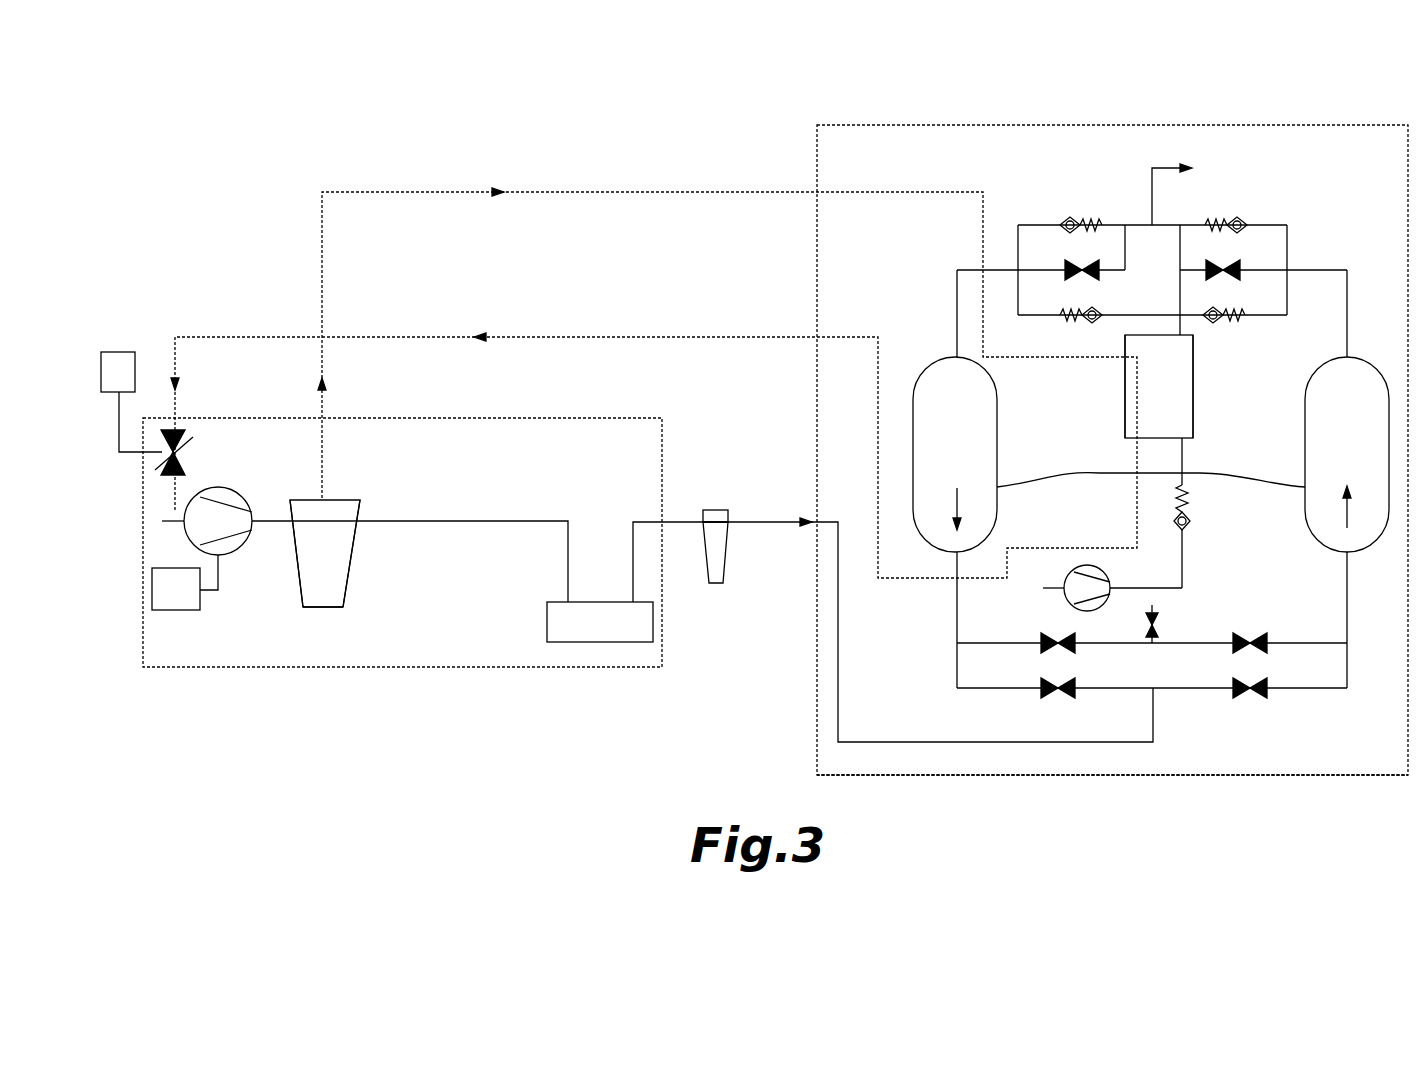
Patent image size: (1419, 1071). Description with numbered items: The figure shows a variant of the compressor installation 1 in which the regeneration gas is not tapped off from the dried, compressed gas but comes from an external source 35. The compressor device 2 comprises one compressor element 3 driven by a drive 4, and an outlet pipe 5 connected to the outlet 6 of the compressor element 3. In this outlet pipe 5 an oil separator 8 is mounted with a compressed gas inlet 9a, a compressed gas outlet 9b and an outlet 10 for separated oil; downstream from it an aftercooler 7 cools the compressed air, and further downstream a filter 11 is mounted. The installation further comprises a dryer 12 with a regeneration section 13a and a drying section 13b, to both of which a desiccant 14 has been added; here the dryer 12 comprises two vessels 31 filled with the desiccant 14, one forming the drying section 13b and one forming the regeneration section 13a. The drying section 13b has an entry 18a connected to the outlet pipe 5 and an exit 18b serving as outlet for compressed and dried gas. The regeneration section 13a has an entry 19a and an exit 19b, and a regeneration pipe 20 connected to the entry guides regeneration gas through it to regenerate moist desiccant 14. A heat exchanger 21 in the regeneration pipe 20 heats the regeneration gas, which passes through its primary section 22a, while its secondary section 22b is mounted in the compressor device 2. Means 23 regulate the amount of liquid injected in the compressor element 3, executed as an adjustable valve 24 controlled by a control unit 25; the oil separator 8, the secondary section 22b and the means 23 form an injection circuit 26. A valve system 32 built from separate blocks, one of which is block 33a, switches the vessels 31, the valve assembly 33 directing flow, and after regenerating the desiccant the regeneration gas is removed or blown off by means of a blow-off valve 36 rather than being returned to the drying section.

The compressor installation 1 is at (222, 142).
The compressor device 2 is at (445, 668).
The compressor element 3 is at (246, 553).
The drive 4 is at (175, 598).
The outlet pipe 5 is at (408, 523).
The outlet 6 is at (258, 512).
The aftercooler 7 is at (563, 643).
The oil separator 8 is at (325, 607).
The compressed gas inlet 9a is at (300, 585).
The compressed gas outlet 9b is at (346, 585).
The outlet for separated oil 10 is at (322, 500).
The filter 11 is at (715, 584).
The dryer 12 is at (900, 776).
The regeneration section 13a is at (993, 406).
The drying section 13b is at (1309, 392).
The desiccant 14 is at (1151, 479).
The entry of the drying section 18a is at (1345, 553).
The exit of the drying section 18b is at (1348, 360).
The entry of the regeneration section 19a is at (952, 357).
The exit of the regeneration section 19b is at (968, 553).
The regeneration pipe 20 is at (1192, 315).
The heat exchanger 21 is at (1194, 350).
The primary section 22a is at (1193, 412).
The secondary section 22b is at (1126, 414).
The means to regulate the amount of injected liquid 23 is at (200, 452).
The adjustable valve 24 is at (184, 432).
The control unit 25 is at (120, 366).
The injection circuit 26 is at (462, 150).
The vessel 31 is at (1151, 480).
The valve system 32 is at (1270, 108).
The valve assembly 33 is at (1310, 722).
The block 33a is at (1279, 182).
The external source 35 is at (1068, 598).
The blow-off valve 36 is at (1143, 622).